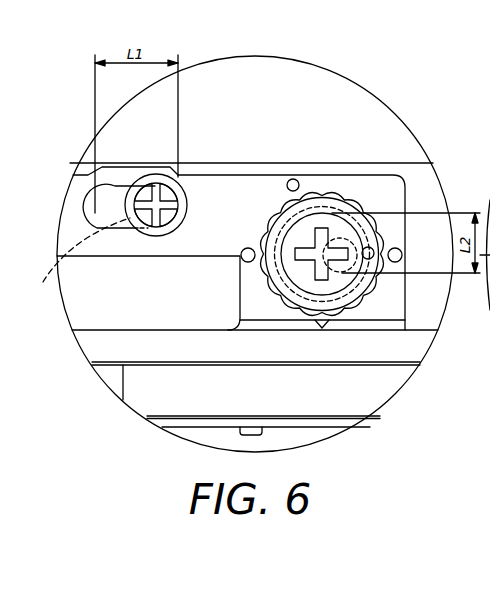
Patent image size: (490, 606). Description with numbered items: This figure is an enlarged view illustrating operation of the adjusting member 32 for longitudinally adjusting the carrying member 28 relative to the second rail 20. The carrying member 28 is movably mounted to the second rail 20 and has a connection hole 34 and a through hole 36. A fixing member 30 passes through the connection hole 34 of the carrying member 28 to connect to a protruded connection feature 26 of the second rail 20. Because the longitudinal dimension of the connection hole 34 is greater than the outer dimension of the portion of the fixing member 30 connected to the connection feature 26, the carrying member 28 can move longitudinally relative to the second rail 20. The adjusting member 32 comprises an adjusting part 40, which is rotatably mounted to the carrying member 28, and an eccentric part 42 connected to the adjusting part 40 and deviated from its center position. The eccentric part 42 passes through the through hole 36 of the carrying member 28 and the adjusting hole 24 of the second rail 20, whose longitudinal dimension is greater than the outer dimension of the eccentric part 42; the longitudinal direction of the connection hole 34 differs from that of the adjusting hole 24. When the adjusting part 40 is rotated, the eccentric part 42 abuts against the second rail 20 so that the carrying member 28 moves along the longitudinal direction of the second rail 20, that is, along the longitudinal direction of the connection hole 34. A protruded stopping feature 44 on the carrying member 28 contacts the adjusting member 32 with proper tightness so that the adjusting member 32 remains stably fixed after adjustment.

The second rail 20 is at (423, 180).
The adjusting hole 24 is at (350, 241).
The connection feature 26 is at (80, 261).
The carrying member 28 is at (247, 177).
The fixing member 30 is at (155, 228).
The adjusting member 32 is at (367, 303).
The connection hole 34 is at (106, 213).
The through hole 36 is at (308, 203).
The adjusting part 40 is at (300, 232).
The eccentric part 42 is at (343, 272).
The stopping feature 44 is at (323, 324).